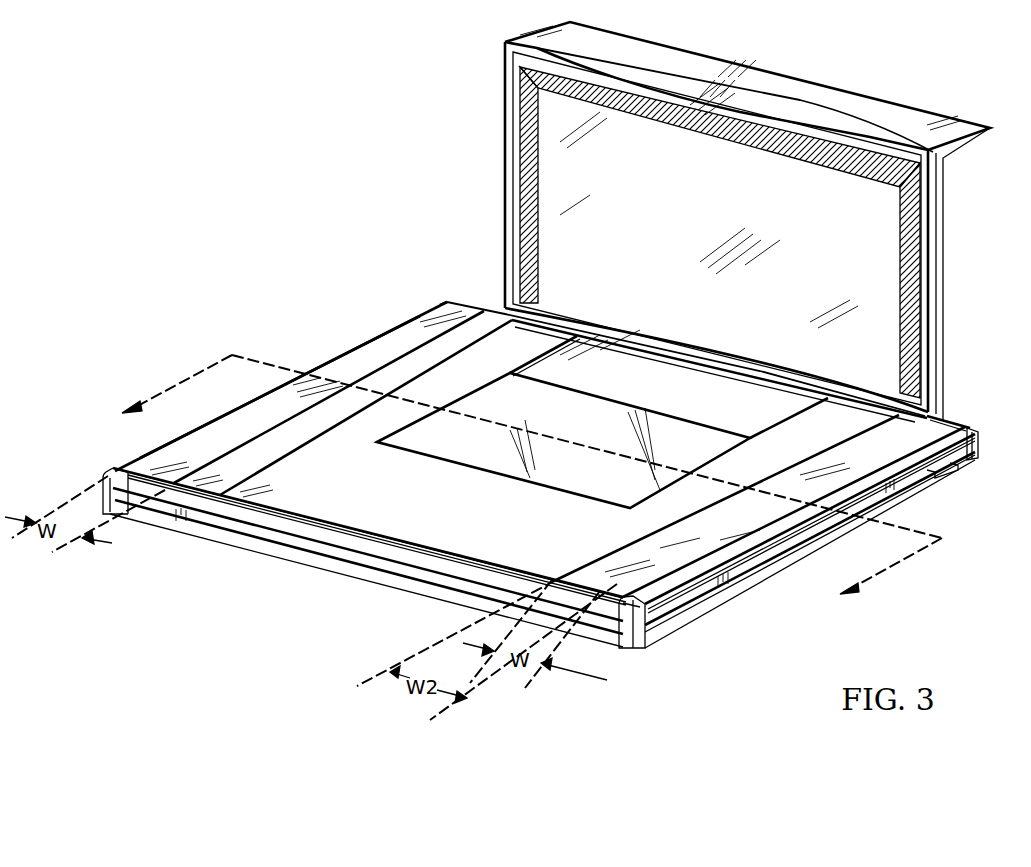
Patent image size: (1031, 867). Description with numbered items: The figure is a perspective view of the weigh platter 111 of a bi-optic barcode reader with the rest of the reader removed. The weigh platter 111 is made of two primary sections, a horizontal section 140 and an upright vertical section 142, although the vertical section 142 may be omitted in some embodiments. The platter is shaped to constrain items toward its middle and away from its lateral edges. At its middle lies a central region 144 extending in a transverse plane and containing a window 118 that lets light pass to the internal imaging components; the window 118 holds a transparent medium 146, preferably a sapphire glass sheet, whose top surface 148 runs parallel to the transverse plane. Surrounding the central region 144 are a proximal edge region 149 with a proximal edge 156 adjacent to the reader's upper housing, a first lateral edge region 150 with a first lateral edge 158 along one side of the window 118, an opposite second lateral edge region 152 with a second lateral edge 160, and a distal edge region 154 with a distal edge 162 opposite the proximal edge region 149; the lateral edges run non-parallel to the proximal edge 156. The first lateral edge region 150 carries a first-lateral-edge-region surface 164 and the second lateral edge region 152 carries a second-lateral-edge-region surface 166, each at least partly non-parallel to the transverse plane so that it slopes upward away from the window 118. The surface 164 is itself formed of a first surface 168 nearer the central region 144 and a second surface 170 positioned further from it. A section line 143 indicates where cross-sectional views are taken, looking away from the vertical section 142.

The weigh platter 111 is at (408, 326).
The window 118 is at (563, 440).
The horizontal section 140 is at (648, 652).
The vertical section 142 is at (462, 58).
The section line 143 is at (518, 490).
The central region 144 is at (504, 462).
The transparent medium 146 is at (728, 444).
The top surface 148 is at (571, 368).
The proximal edge region 149 is at (705, 323).
The first lateral edge region 150 is at (360, 338).
The second lateral edge region 152 is at (913, 478).
The distal edge region 154 is at (351, 586).
The proximal edge 156 is at (796, 369).
The first lateral edge 158 is at (345, 358).
The second lateral edge 160 is at (792, 546).
The distal edge 162 is at (243, 505).
The first-lateral-edge-region surface 164 is at (450, 302).
The second-lateral-edge-region surface 166 is at (938, 437).
The first surface 168 is at (552, 316).
The second surface 170 is at (488, 306).